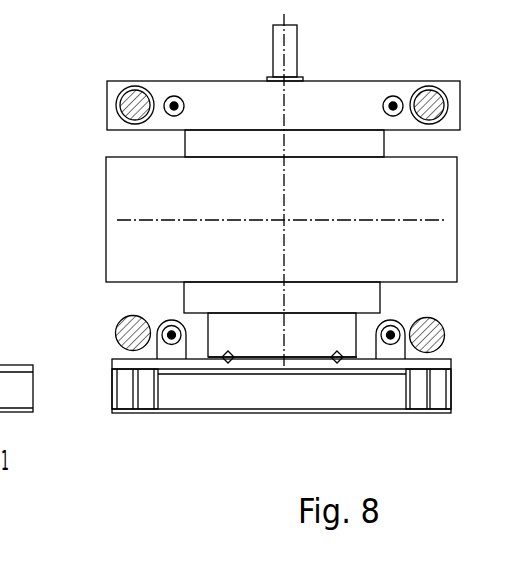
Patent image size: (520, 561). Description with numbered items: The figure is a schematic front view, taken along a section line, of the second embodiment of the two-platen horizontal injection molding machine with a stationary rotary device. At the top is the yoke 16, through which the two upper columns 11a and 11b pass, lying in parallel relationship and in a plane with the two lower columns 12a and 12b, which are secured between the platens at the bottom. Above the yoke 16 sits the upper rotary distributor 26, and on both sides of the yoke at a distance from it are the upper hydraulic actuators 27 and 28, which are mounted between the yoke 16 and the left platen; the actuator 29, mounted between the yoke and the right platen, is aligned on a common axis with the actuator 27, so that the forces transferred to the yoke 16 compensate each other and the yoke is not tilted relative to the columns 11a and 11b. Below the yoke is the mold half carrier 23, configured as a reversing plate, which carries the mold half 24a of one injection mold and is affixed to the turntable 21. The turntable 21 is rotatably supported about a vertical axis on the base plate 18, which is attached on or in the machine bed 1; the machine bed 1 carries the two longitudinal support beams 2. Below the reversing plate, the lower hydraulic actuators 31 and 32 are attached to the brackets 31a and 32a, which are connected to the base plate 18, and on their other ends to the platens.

The machine bed 1 is at (452, 393).
The longitudinal support beams 2 is at (132, 413).
The column 11a is at (122, 99).
The column 11b is at (446, 97).
The column 12a is at (120, 330).
The column 12b is at (445, 328).
The yoke 16 is at (241, 99).
The base plate 18 is at (248, 362).
The turntable 21 is at (300, 340).
The mold half carrier 23 is at (220, 157).
The mold half 24a is at (356, 200).
The upper rotary distributor 26 is at (297, 52).
The hydraulic actuator 27 is at (174, 96).
The hydraulic actuator 28 is at (394, 96).
The hydraulic actuator 29 is at (0, 556).
The hydraulic actuator 31 is at (173, 345).
The bracket 31a is at (170, 318).
The hydraulic actuator 32 is at (390, 345).
The bracket 32a is at (391, 318).